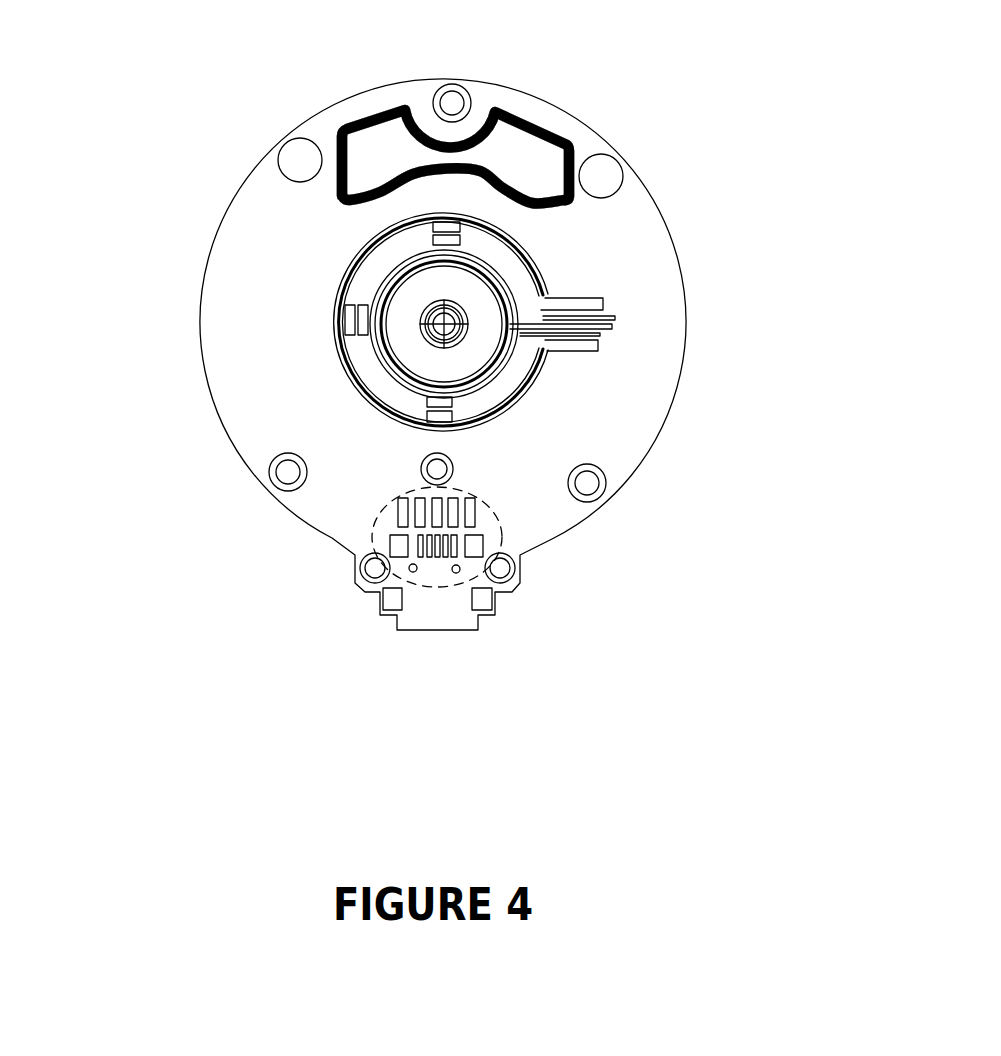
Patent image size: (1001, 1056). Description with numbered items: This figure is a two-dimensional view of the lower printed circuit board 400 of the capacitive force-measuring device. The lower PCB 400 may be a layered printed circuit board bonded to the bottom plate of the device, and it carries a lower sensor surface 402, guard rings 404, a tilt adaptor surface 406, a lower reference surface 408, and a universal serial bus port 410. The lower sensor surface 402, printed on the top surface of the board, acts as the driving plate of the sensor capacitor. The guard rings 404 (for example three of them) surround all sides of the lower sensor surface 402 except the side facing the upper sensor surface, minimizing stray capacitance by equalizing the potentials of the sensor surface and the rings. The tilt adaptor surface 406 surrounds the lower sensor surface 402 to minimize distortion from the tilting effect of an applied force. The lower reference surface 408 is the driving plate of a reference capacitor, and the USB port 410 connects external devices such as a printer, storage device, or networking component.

The lower printed circuit board 400 is at (556, 615).
The lower sensor surface 402 is at (490, 298).
The guard rings 404 is at (468, 333).
The tilt adaptor surface 406 is at (482, 240).
The lower reference surface 408 is at (568, 78).
The universal serial bus port 410 is at (493, 527).